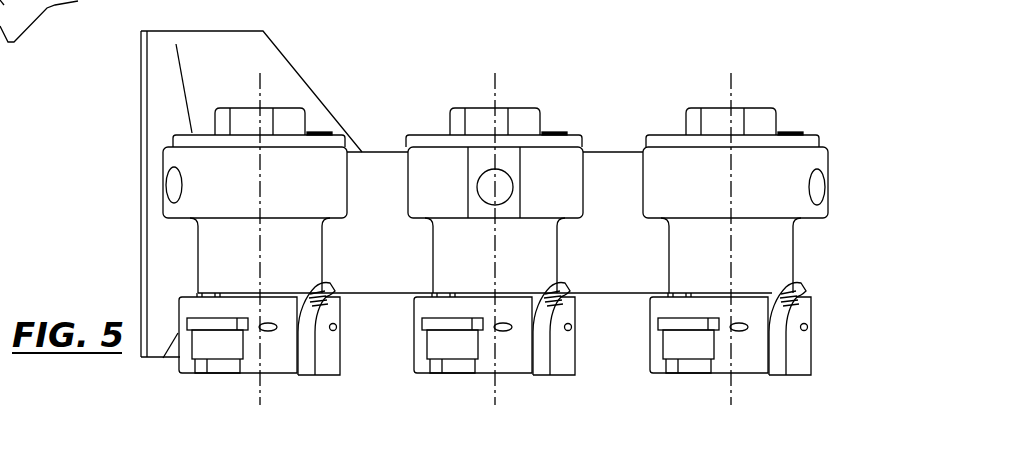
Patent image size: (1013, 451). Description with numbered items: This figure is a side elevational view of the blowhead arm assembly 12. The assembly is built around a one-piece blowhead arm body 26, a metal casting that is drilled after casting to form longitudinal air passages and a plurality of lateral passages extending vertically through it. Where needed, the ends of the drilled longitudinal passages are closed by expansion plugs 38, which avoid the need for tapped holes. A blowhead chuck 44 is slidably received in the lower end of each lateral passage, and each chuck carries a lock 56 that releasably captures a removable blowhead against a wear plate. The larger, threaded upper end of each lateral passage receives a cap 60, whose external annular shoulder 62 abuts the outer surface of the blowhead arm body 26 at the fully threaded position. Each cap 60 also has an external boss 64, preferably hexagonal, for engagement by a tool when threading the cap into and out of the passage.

The blowhead arm assembly 12 is at (580, 40).
The blowhead arm body 26 is at (605, 148).
The expansion plug 38 is at (172, 183).
The blowhead chuck 44 is at (176, 367).
The lock 56 is at (330, 287).
The cap 60 is at (303, 106).
The external annular shoulder 62 is at (417, 138).
The external boss 64 is at (267, 114).